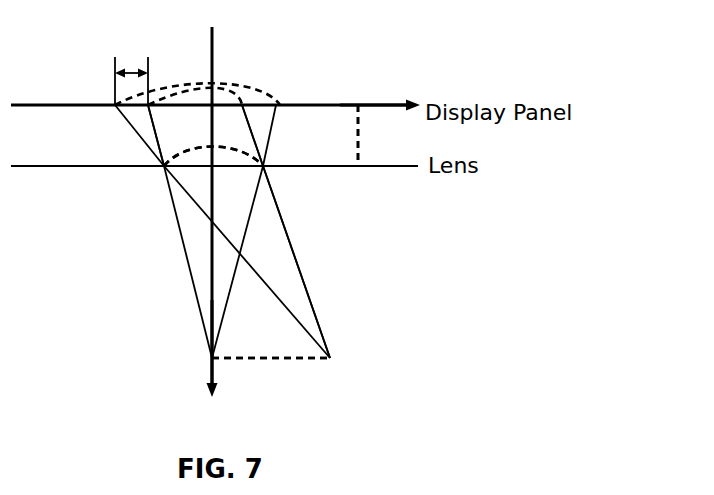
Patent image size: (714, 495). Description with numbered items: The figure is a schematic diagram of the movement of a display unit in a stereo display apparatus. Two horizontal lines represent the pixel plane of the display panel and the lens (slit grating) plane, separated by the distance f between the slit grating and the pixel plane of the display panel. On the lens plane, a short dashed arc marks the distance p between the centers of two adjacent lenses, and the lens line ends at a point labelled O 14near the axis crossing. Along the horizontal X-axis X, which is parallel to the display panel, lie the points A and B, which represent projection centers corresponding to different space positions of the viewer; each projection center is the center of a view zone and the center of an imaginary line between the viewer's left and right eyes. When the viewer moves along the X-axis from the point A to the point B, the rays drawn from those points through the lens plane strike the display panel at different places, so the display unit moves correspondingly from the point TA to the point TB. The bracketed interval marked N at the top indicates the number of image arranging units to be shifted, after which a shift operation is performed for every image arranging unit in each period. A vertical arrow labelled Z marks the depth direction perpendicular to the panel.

The number of image arranging units to be shifted N is at (131, 70).
The point TB is at (161, 112).
The point TA is at (225, 112).
The distance between centers of two adjacent lenses p is at (213, 148).
The distance between slit grating and pixel plane f is at (368, 135).
The lens origin O is at (379, 174).
The point A is at (259, 356).
The point B is at (298, 275).
The X-axis X is at (376, 95).
The Z axis Z is at (223, 350).